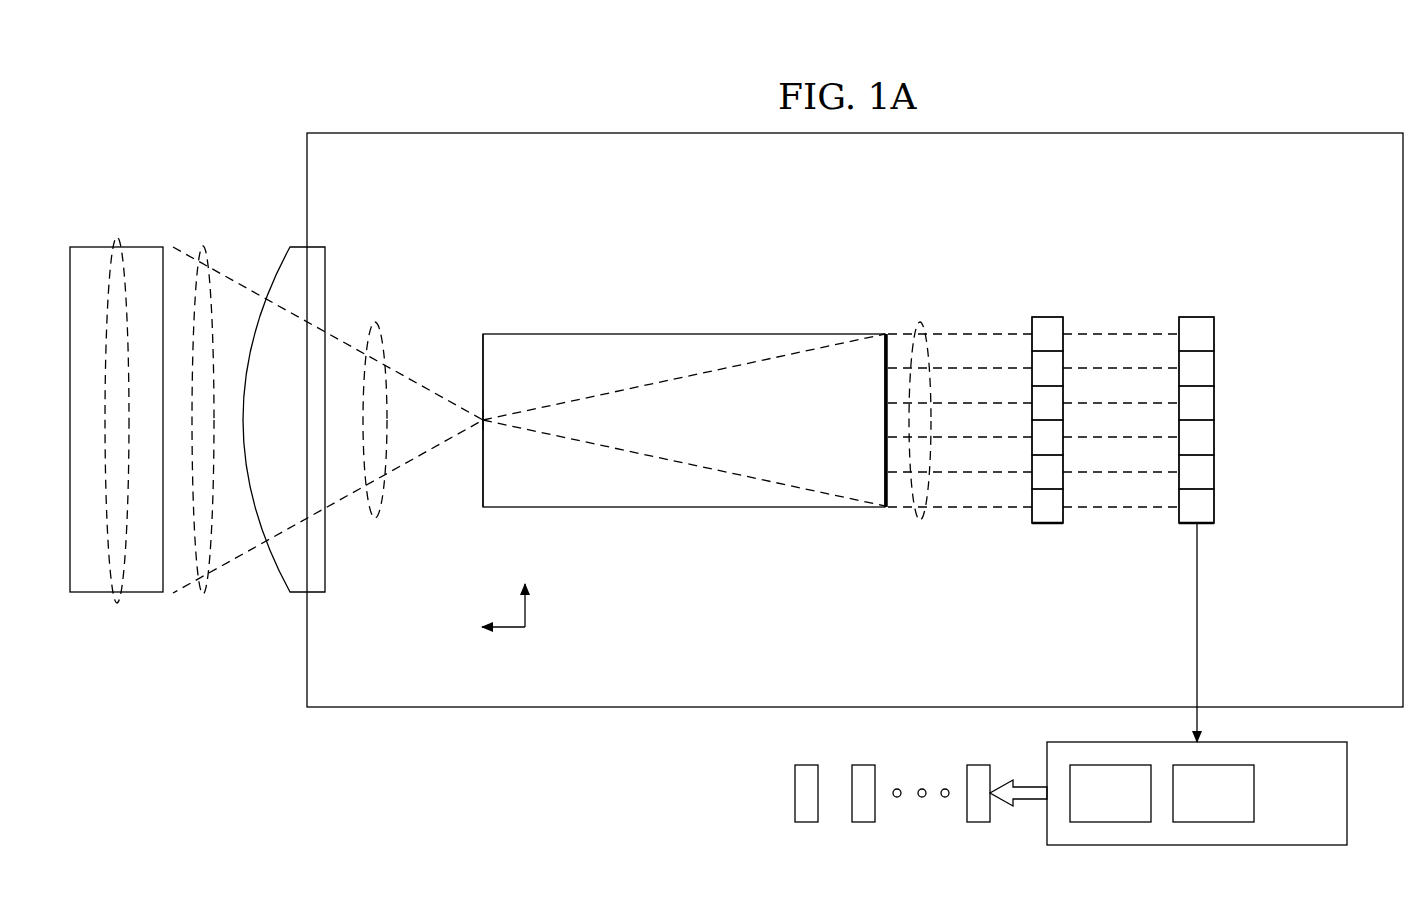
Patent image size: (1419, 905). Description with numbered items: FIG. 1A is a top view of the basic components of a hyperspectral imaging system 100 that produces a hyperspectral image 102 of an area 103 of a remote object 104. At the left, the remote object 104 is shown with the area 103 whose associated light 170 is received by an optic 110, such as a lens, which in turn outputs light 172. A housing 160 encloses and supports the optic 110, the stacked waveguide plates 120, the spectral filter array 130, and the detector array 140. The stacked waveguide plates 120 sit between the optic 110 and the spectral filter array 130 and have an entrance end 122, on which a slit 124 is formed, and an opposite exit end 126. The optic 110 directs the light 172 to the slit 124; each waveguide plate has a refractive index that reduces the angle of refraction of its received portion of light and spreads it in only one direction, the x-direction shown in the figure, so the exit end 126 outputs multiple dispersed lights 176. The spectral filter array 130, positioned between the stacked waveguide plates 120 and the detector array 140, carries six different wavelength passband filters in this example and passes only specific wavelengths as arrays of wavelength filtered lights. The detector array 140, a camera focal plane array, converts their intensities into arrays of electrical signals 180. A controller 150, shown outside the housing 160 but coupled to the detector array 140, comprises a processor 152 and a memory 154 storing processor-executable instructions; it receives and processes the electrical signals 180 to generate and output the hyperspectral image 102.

The hyperspectral imaging system 100 is at (512, 78).
The hyperspectral image 102 is at (807, 822).
The area 103 is at (117, 237).
The remote object 104 is at (99, 610).
The optic 110 is at (274, 290).
The stacked waveguide plates 120 is at (650, 334).
The entrance end 122 is at (483, 355).
The slit 124 is at (480, 428).
The exit end 126 is at (891, 399).
The spectral filter array 130 is at (1045, 317).
The detector array 140 is at (1203, 317).
The controller 150 is at (1280, 806).
The processor 152 is at (1090, 806).
The memory 154 is at (1193, 806).
The housing 160 is at (1093, 133).
The light 170 is at (203, 246).
The light 172 is at (375, 322).
The dispersed lights 176 is at (920, 520).
The electrical signals 180 is at (1222, 632).